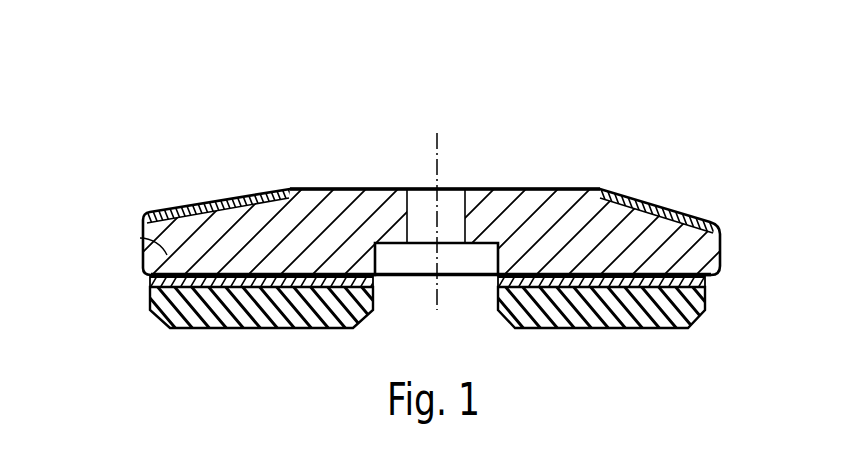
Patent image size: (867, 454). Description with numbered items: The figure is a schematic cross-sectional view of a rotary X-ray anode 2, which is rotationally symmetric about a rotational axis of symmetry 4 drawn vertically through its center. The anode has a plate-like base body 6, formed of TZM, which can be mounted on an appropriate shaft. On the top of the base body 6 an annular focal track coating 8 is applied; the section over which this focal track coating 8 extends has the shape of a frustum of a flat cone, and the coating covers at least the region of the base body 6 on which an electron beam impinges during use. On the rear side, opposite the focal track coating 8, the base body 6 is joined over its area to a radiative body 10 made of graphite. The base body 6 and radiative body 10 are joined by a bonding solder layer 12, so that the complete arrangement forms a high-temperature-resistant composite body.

The rotary X-ray anode 2 is at (254, 66).
The rotational axis of symmetry 4 is at (440, 150).
The base body 6 is at (140, 235).
The annular focal track coating 8 is at (248, 192).
The radiative body 10 is at (598, 313).
The bonding solder layer 12 is at (707, 285).